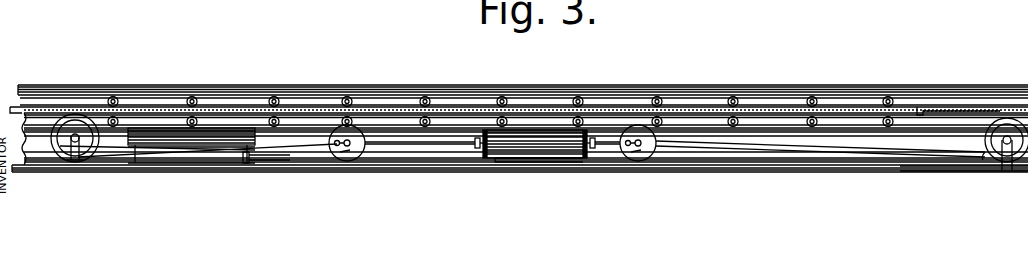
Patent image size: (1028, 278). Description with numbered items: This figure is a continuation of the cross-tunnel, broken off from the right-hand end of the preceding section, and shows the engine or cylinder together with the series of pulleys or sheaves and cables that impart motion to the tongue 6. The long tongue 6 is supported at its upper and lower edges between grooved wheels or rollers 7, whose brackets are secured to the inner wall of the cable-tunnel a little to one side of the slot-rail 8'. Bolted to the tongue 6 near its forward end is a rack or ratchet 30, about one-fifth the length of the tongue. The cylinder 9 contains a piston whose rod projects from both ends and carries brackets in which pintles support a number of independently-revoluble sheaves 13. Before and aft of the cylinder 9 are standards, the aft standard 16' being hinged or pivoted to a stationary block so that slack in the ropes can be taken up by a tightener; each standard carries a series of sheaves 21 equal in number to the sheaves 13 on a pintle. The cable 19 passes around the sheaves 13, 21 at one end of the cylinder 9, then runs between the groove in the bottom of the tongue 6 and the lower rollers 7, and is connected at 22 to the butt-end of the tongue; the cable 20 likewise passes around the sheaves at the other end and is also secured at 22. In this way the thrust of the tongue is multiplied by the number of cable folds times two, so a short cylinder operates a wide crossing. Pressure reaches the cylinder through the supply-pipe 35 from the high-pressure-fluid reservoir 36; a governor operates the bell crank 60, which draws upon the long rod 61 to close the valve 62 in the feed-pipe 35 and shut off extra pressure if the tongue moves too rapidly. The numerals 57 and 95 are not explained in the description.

The rack or ratchet 30 is at (162, 110).
The grooved wheels or rollers 7 is at (279, 97).
The tongue 6 is at (378, 112).
The slot-rail 8' is at (519, 89).
The connection to butt-end of tongue 22 is at (920, 107).
The pulley 57 is at (1006, 117).
The pivoted standard 16' is at (64, 138).
The sheaves 21 is at (97, 142).
The bottom rail 95 is at (18, 165).
The high-pressure-fluid reservoir 36 is at (176, 166).
The cable 19 is at (209, 165).
The valve 62 is at (253, 163).
The independently-revoluble sheaves 13 is at (350, 154).
The supply-pipe 35 is at (404, 165).
The cylinder 9 is at (490, 165).
The long rod 61 is at (602, 159).
The cable 20 is at (710, 150).
The bell crank 60 is at (960, 173).